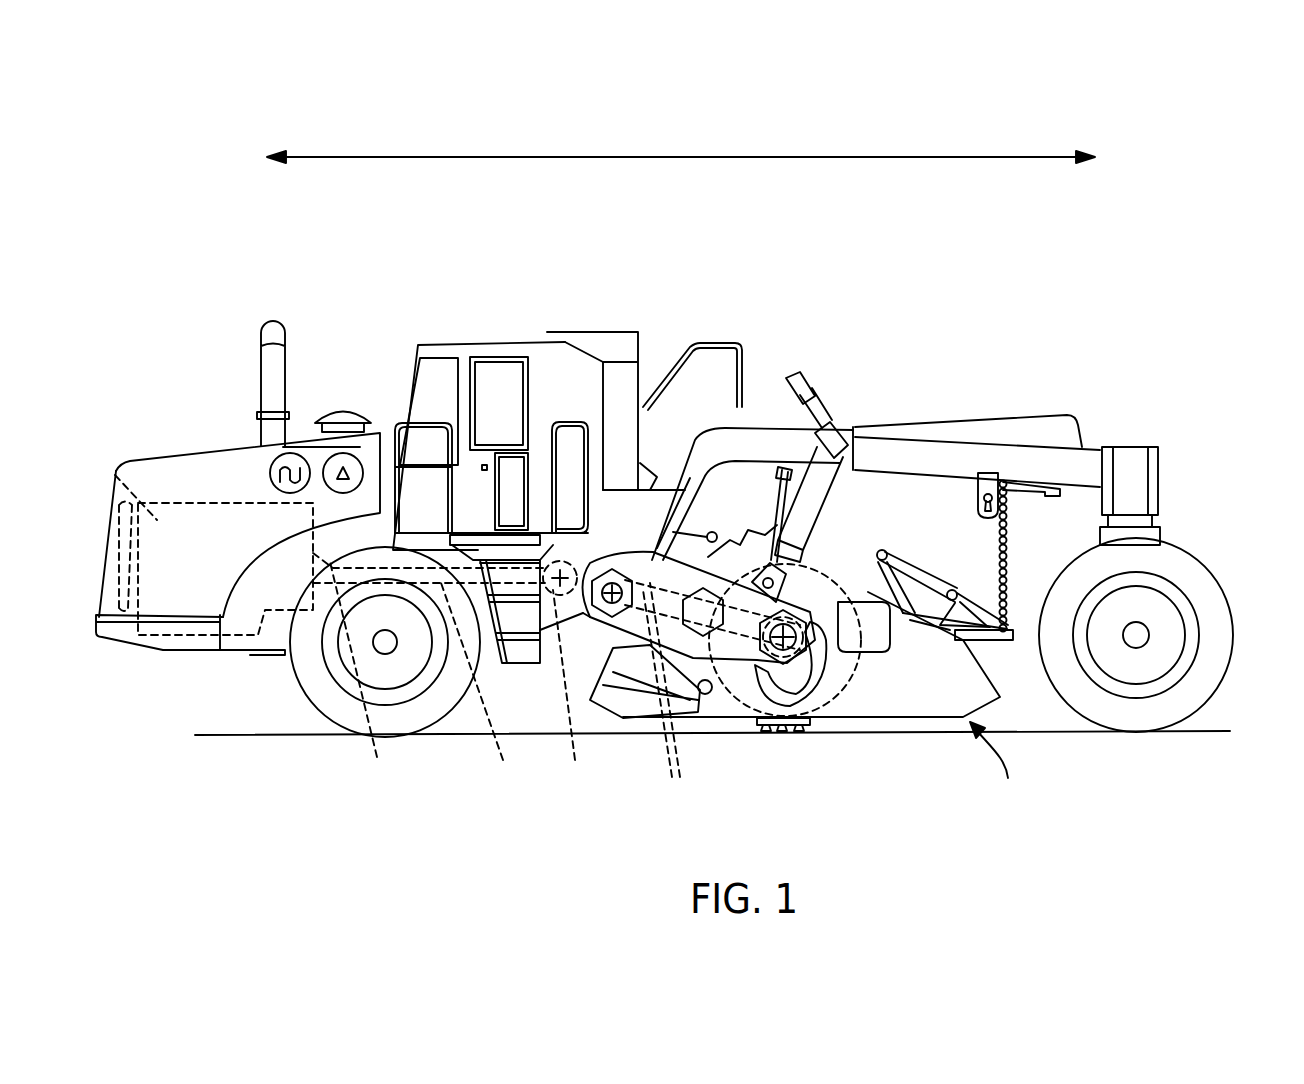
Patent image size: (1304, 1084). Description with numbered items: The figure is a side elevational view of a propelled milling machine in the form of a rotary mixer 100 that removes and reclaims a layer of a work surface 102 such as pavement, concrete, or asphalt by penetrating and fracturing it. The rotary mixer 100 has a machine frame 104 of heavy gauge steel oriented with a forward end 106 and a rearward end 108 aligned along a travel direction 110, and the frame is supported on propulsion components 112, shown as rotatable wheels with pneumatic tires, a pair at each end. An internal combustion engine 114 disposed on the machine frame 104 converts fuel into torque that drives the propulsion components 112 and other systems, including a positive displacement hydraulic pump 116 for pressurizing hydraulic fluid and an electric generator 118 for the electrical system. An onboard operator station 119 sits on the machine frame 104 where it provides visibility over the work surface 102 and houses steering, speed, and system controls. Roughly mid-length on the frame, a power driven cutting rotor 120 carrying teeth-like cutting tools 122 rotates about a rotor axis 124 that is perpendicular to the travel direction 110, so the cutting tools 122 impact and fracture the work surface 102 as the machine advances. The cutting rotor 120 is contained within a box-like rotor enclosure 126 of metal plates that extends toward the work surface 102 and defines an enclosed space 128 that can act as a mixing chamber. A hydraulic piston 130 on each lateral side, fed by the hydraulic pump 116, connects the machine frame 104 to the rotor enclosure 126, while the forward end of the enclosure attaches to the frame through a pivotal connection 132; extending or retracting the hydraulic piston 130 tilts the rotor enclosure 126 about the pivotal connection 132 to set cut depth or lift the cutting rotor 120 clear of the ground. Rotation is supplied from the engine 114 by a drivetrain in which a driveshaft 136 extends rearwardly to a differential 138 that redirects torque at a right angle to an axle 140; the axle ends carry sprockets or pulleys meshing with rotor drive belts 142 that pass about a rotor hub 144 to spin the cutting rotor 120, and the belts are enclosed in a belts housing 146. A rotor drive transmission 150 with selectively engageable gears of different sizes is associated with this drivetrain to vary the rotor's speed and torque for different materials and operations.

The rotary mixer 100 is at (930, 345).
The work surface 102 is at (222, 735).
The machine frame 104 is at (757, 440).
The forward end 106 is at (158, 470).
The rearward end 108 is at (1082, 462).
The travel direction 110 is at (640, 157).
The propulsion components 112 is at (315, 690).
The internal combustion engine 114 is at (115, 474).
The hydraulic pump 116 is at (345, 470).
The electric generator 118 is at (290, 470).
The operator station 119 is at (487, 345).
The cutting rotor 120 is at (870, 733).
The cutting tools 122 is at (805, 731).
The rotor axis 124 is at (805, 610).
The rotor enclosure 126 is at (928, 690).
The enclosed space 128 is at (997, 767).
The hydraulic piston 130 is at (817, 462).
The pivotal connection 132 is at (611, 600).
The driveshaft 136 is at (429, 675).
The differential 138 is at (571, 697).
The axle 140 is at (580, 563).
The rotor drive belts 142 is at (670, 696).
The rotor hub 144 is at (845, 540).
The belts housing 146 is at (697, 470).
The rotor drive transmission 150 is at (362, 679).